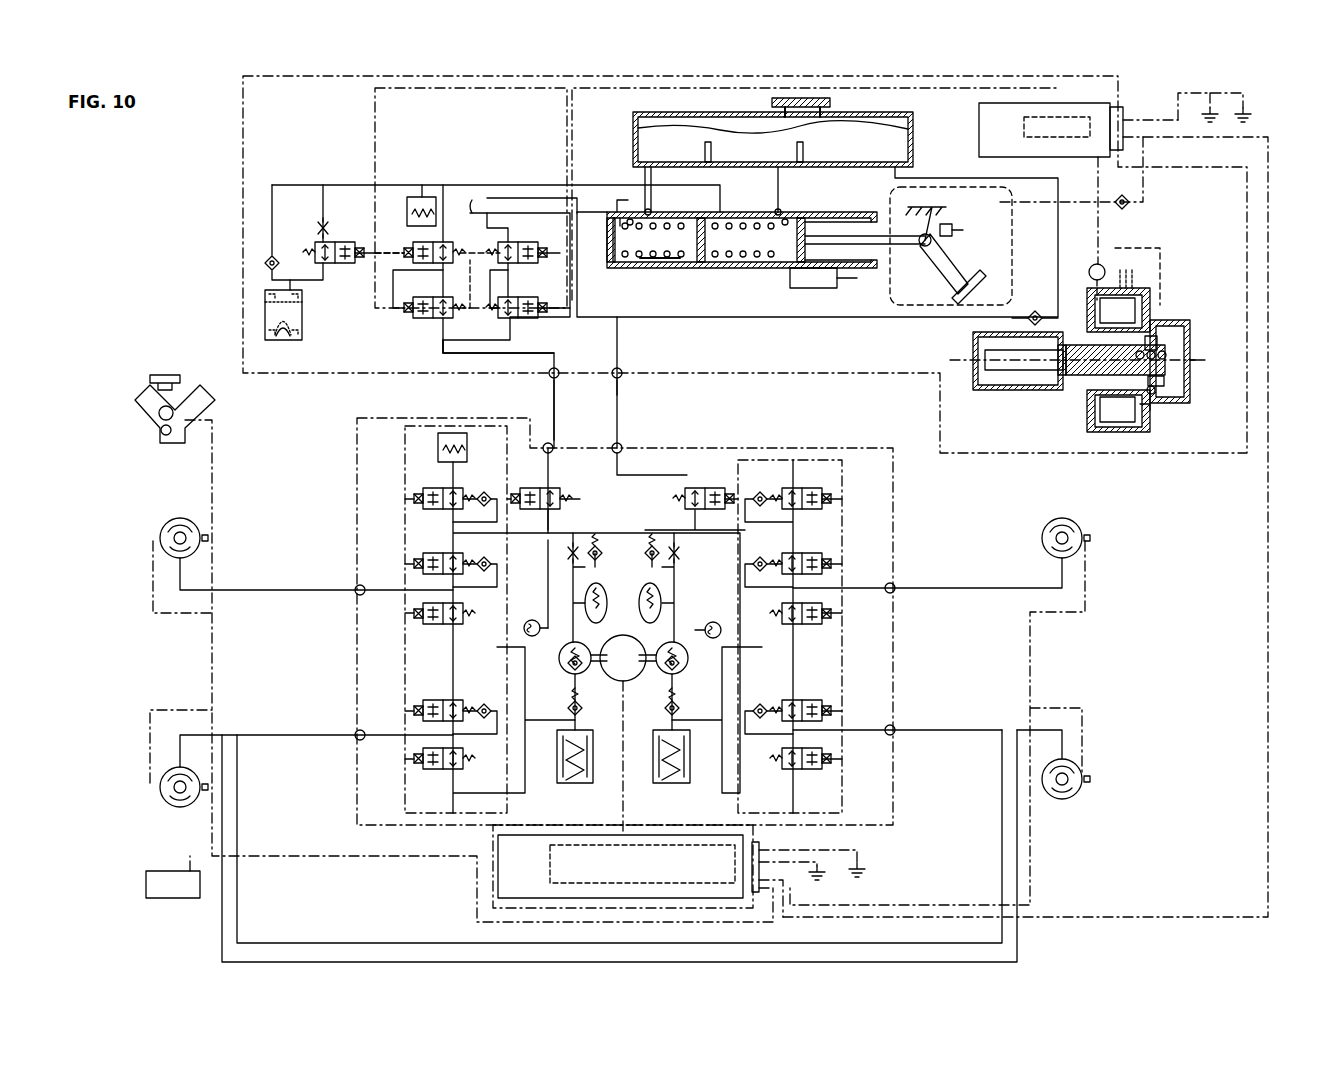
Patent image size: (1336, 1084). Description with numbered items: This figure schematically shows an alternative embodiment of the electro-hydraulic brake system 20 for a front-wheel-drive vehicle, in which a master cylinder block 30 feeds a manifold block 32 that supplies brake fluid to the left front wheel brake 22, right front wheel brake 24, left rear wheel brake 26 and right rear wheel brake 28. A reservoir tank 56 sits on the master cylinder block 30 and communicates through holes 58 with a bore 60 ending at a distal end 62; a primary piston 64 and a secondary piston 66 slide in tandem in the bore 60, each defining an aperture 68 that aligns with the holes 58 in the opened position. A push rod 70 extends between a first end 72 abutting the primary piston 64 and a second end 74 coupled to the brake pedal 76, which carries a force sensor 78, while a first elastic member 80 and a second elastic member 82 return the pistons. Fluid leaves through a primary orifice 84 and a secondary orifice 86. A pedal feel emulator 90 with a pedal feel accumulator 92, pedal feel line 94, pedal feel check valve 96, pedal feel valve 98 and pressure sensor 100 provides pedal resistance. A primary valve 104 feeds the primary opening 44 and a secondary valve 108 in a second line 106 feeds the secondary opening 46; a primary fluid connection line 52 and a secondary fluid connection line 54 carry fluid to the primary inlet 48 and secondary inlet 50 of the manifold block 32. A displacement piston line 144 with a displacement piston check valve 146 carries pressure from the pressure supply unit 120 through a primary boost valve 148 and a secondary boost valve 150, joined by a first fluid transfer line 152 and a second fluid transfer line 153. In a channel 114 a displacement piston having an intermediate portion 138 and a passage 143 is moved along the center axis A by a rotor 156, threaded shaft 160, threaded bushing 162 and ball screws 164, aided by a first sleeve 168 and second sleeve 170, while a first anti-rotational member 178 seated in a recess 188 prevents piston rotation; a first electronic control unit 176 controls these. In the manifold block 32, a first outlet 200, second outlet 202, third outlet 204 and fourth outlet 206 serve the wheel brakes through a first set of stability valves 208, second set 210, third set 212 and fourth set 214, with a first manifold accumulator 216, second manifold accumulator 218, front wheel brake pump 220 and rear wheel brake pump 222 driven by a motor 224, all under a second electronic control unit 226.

The electro-hydraulic brake system 20 is at (1300, 90).
The left front wheel brake 22 is at (162, 778).
The right front wheel brake 24 is at (168, 522).
The left rear wheel brake 26 is at (1088, 786).
The right rear wheel brake 28 is at (1088, 544).
The master cylinder block 30 is at (994, 66).
The manifold block 32 is at (384, 838).
The primary opening 44 is at (550, 372).
The secondary opening 46 is at (623, 372).
The primary inlet 48 is at (553, 452).
The secondary inlet 50 is at (617, 455).
The primary fluid connection line 52 is at (552, 430).
The secondary fluid connection line 54 is at (622, 383).
The reservoir tank 56 is at (848, 110).
The holes 58 is at (634, 220).
The bore 60 is at (615, 212).
The distal end 62 is at (608, 262).
The primary piston 64 is at (795, 264).
The secondary piston 66 is at (660, 262).
The aperture 68 is at (640, 210).
The push rod 70 is at (870, 266).
The first end 72 is at (822, 288).
The second end 74 is at (928, 204).
The brake pedal 76 is at (950, 300).
The force sensor 78 is at (954, 228).
The first elastic member 80 is at (622, 262).
The second elastic member 82 is at (706, 262).
The primary orifice 84 is at (748, 116).
The secondary orifice 86 is at (618, 210).
The pedal feel emulator 90 is at (256, 302).
The pedal feel accumulator 92 is at (288, 340).
The pedal feel line 94 is at (476, 185).
The pedal feel check valve 96 is at (265, 260).
The pedal feel valve 98 is at (305, 238).
The pressure sensor 100 is at (416, 196).
The primary valve 104 is at (415, 245).
The second line 106 is at (538, 198).
The secondary valve 108 is at (505, 315).
The channel 114 is at (1010, 390).
The pressure supply unit 120 is at (1158, 416).
The intermediate portion 138 is at (1090, 268).
The passage 143 is at (1058, 378).
The displacement piston line 144 is at (782, 318).
The displacement piston check valve 146 is at (1035, 310).
The primary boost valve 148 is at (420, 318).
The secondary boost valve 150 is at (512, 240).
The first fluid transfer line 152 is at (445, 356).
The second fluid transfer line 153 is at (620, 342).
The rotor 156 is at (1170, 340).
The threaded shaft 160 is at (1188, 380).
The threaded bushing 162 is at (1158, 336).
The ball screws 164 is at (1152, 395).
The first sleeve 168 is at (1118, 296).
The second sleeve 170 is at (1112, 410).
The first electronic control unit 176 is at (1048, 104).
The first anti-rotational member 178 is at (990, 380).
The recess 188 is at (1165, 412).
The first outlet 200 is at (356, 586).
The second outlet 202 is at (358, 738).
The third outlet 204 is at (892, 734).
The fourth outlet 206 is at (892, 586).
The first set of stability valves 208 is at (420, 492).
The second set of stability valves 210 is at (420, 615).
The third set of stability valves 212 is at (825, 622).
The fourth set of stability valves 214 is at (808, 488).
The first manifold accumulator 216 is at (566, 784).
The second manifold accumulator 218 is at (676, 784).
The front wheel brake pump 220 is at (562, 640).
The rear wheel brake pump 222 is at (700, 650).
The motor 224 is at (614, 600).
The second electronic control unit 226 is at (596, 892).
The center axis A is at (1205, 358).